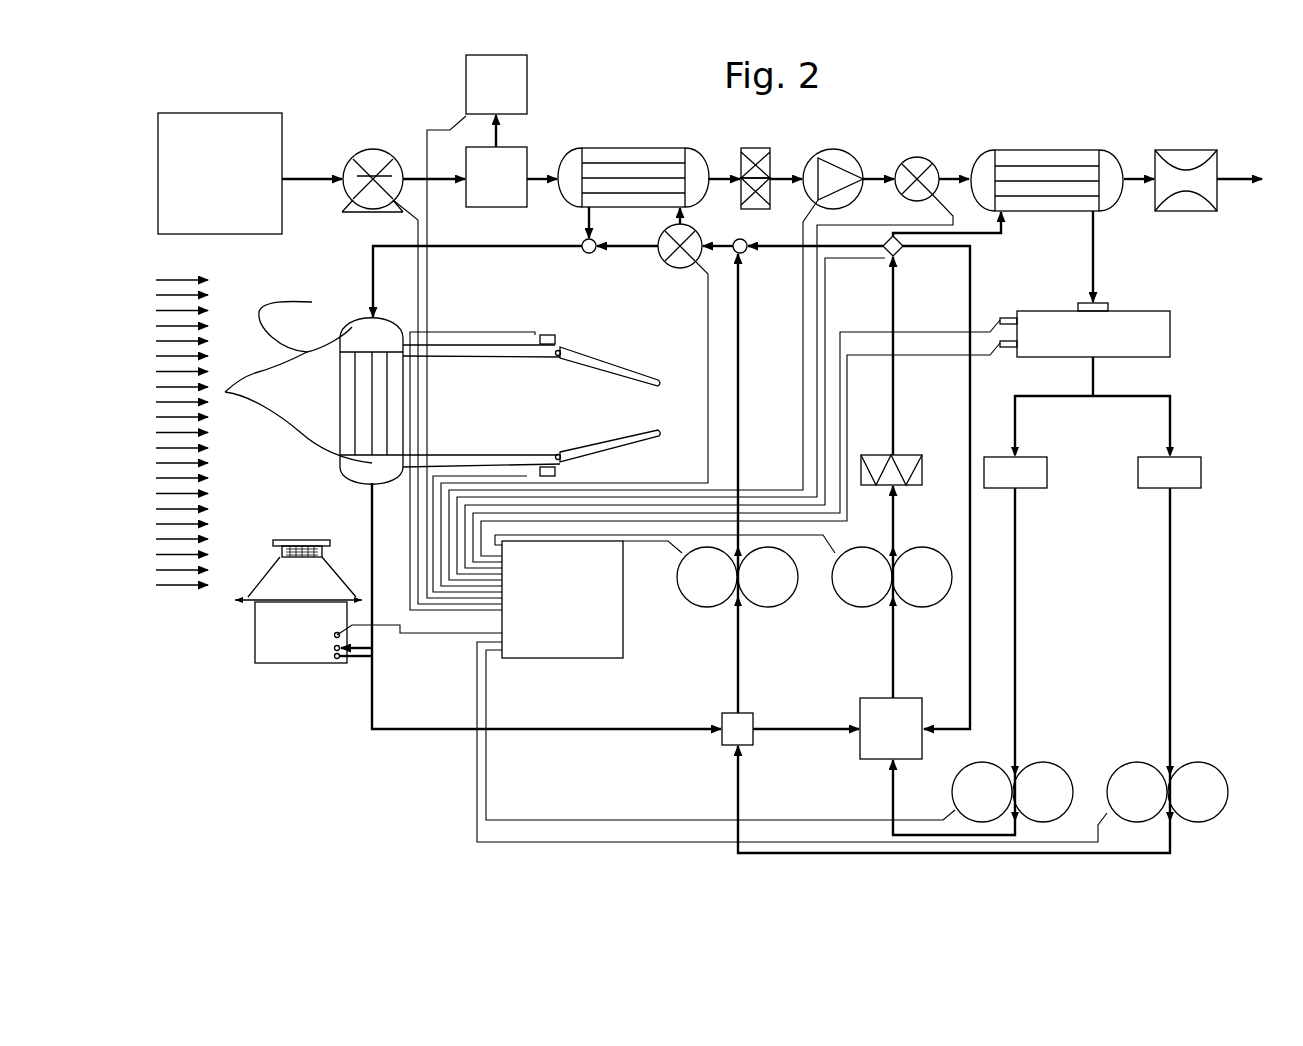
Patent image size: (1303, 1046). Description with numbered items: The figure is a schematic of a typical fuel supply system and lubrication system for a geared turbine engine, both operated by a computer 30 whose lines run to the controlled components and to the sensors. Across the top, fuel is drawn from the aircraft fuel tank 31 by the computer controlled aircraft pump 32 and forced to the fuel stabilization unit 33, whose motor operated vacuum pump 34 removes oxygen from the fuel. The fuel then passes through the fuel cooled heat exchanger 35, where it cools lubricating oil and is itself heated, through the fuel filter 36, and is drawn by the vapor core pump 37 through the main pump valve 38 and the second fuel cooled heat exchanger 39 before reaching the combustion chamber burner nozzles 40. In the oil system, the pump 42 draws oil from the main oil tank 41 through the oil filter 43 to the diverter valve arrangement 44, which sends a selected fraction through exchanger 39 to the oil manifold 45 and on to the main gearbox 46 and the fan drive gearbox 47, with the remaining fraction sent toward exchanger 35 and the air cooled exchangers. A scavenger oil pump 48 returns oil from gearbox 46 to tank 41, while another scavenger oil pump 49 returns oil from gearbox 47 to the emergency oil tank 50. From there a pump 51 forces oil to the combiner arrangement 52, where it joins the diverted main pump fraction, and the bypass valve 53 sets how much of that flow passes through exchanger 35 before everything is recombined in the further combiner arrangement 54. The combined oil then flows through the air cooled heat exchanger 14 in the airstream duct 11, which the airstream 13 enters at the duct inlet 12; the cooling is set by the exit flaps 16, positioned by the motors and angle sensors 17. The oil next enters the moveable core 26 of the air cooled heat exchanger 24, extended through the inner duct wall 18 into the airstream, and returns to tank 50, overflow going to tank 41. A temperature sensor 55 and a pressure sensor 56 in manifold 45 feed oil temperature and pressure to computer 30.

The airstream duct 11 is at (494, 384).
The duct inlet 12 is at (280, 367).
The airstream 13 is at (181, 277).
The air cooled heat exchanger 14 is at (353, 332).
The exit flaps 16 is at (597, 358).
The angle positioning motors combined with angle sensors 17 is at (549, 336).
The inner duct wall 18 is at (240, 605).
The air cooled heat exchanger 24 is at (327, 663).
The moveable core 26 is at (320, 540).
The computer 30 is at (623, 645).
The aircraft fuel tank 31 is at (218, 112).
The aircraft pump 32 is at (358, 142).
The fuel stabilization unit 33 is at (527, 147).
The vacuum pump 34 is at (466, 84).
The fuel cooled heat exchanger 35 is at (647, 146).
The fuel filter 36 is at (747, 146).
The vapor core pump 37 is at (833, 149).
The main pump valve 38 is at (938, 157).
The second fuel cooled heat exchanger 39 is at (1023, 150).
The combustion chamber burner nozzles 40 is at (1183, 151).
The main oil tank 41 is at (858, 715).
The pump 42 is at (833, 592).
The oil filter 43 is at (903, 452).
The diverter valve arrangement 44 is at (903, 253).
The oil manifold 45 is at (1140, 310).
The main gearbox 46 is at (1030, 489).
The fan drive gearbox 47 is at (1187, 489).
The scavenger oil pump 48 is at (1042, 761).
The scavenger oil pump 49 is at (1197, 760).
The emergency oil tank 50 is at (727, 747).
The pump 51 is at (677, 568).
The combiner arrangement 52 is at (746, 253).
The bypass valve 53 is at (658, 248).
The combiner arrangement 54 is at (582, 248).
The temperature sensor 55 is at (1009, 348).
The pressure sensor 56 is at (1009, 317).